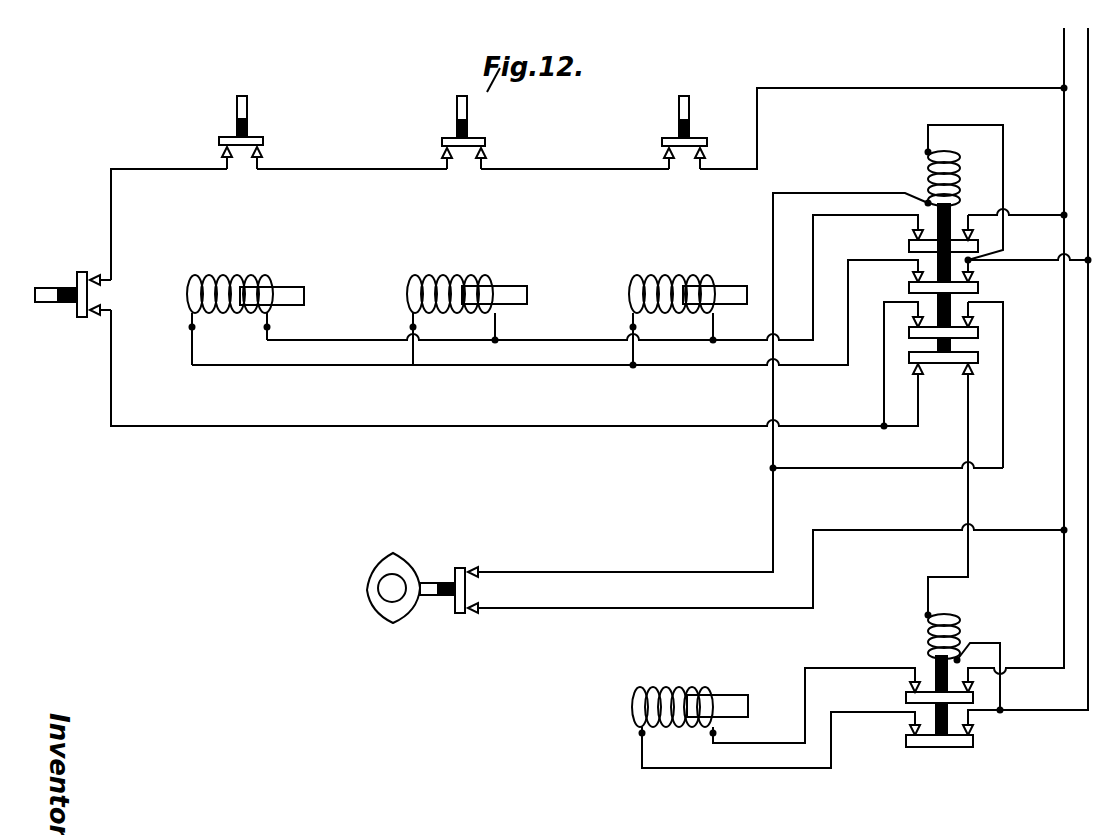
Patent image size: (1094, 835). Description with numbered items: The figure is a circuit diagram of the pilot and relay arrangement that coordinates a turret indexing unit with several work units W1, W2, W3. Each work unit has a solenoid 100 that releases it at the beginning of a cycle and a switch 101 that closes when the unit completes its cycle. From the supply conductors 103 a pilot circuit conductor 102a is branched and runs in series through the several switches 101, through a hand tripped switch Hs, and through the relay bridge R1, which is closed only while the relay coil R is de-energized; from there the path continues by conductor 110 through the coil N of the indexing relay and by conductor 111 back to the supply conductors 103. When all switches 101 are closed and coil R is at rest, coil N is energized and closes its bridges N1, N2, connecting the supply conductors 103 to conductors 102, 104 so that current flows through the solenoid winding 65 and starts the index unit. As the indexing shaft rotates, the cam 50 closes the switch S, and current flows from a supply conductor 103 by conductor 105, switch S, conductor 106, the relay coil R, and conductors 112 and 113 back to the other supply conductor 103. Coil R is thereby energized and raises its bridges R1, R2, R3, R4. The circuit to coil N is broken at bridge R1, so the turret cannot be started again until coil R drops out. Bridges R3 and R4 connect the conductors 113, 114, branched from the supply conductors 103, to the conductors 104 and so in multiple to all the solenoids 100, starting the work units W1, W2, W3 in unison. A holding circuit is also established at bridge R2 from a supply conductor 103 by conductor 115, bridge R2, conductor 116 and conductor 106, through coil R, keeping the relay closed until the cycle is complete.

The cam 50 is at (383, 573).
The solenoid winding 65 is at (685, 668).
The solenoid 100 is at (215, 277).
The switch 101 is at (252, 138).
The conductor 102 is at (803, 673).
The pilot circuit conductor 102a is at (172, 168).
The supply conductors 103 is at (1088, 74).
The return conductor 104 is at (553, 367).
The conductor 105 is at (605, 610).
The conductor 106 is at (840, 183).
The conductor 110 is at (970, 498).
The conductor 111 is at (1000, 691).
The conductor 112 is at (1003, 165).
The conductor 113 is at (1033, 261).
The conductor 114 is at (1033, 216).
The conductor 115 is at (884, 393).
The conductor 116 is at (1003, 417).
The hand tripped switch Hs is at (82, 280).
The switch S is at (458, 616).
The relay coil R is at (961, 166).
The relay bridge R1 is at (963, 358).
The relay bridge R2 is at (968, 335).
The relay bridge R3 is at (909, 288).
The relay bridge R4 is at (909, 245).
The coil of indexing relay N is at (958, 637).
The relay bridge N1 is at (906, 698).
The relay bridge N2 is at (906, 742).
The work unit W1 is at (683, 181).
The work unit W2 is at (463, 181).
The work unit W3 is at (241, 180).